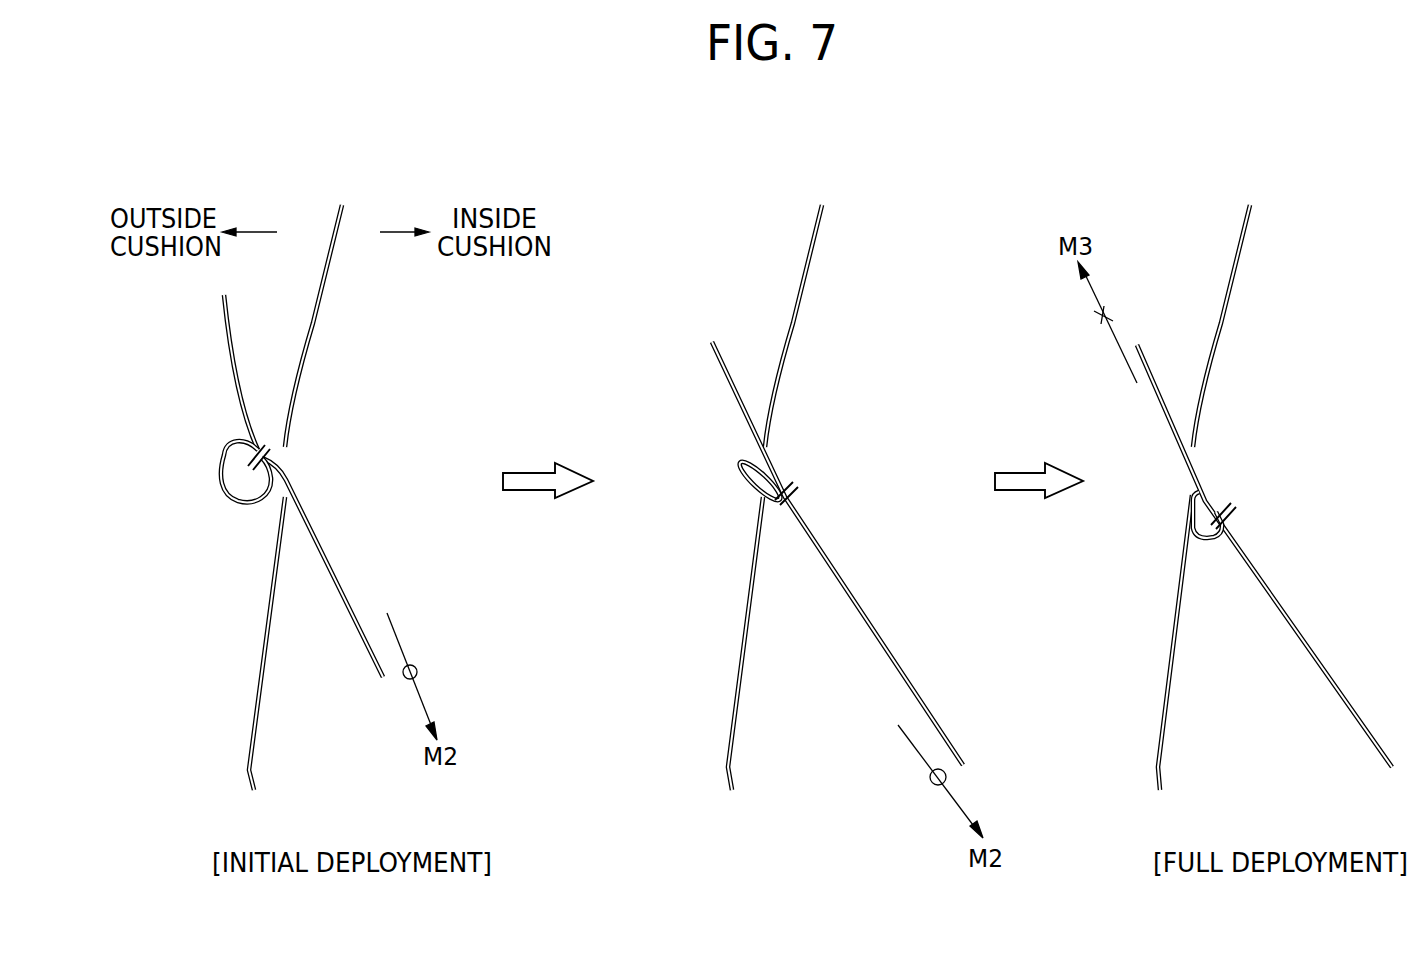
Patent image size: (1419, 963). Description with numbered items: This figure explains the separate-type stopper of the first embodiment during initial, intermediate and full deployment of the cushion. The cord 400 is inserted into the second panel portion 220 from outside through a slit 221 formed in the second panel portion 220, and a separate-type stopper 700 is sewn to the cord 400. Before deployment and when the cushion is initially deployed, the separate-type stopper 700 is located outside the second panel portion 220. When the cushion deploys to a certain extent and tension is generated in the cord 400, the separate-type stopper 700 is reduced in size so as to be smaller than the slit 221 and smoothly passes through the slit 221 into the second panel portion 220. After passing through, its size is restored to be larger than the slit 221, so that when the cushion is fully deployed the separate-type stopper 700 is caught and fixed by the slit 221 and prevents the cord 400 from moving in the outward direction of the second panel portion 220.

The second panel portion 220 is at (270, 610).
The slit 221 is at (286, 457).
The cord 400 is at (227, 328).
The separate-type stopper 700 is at (220, 467).